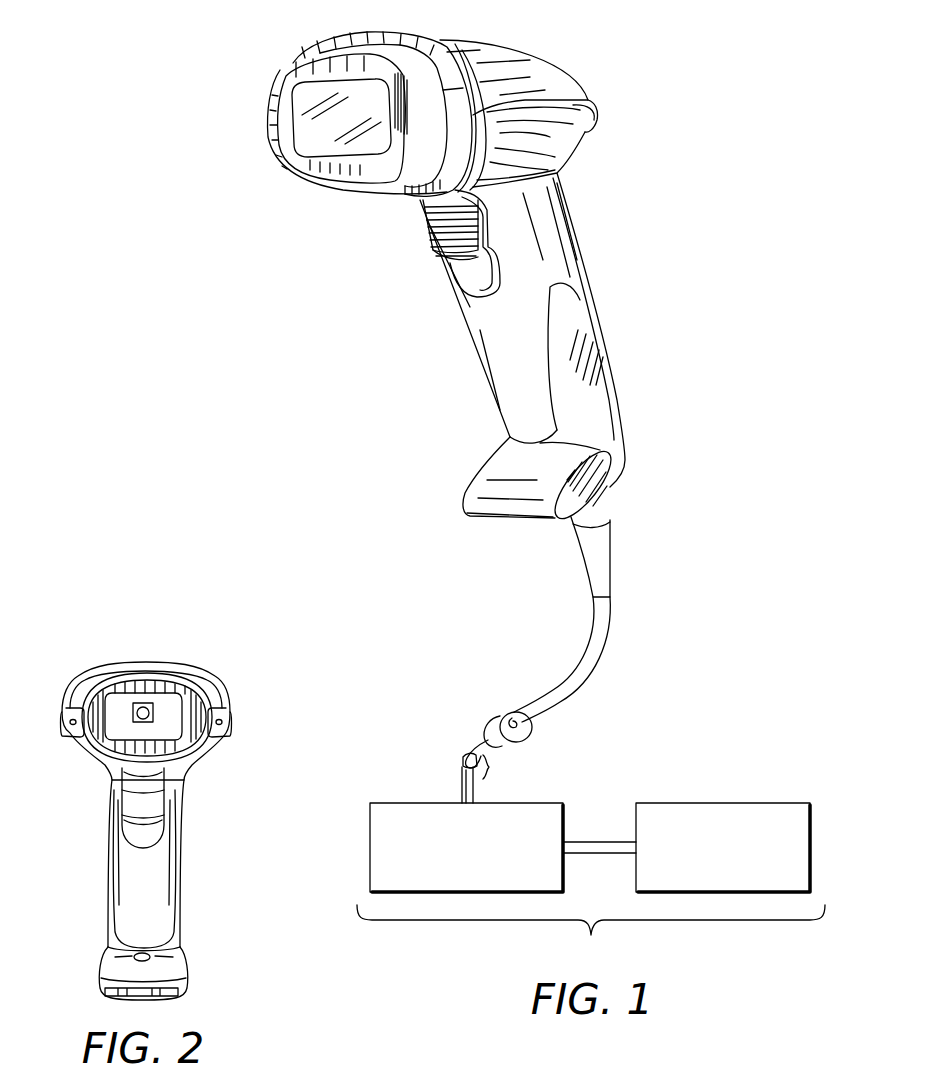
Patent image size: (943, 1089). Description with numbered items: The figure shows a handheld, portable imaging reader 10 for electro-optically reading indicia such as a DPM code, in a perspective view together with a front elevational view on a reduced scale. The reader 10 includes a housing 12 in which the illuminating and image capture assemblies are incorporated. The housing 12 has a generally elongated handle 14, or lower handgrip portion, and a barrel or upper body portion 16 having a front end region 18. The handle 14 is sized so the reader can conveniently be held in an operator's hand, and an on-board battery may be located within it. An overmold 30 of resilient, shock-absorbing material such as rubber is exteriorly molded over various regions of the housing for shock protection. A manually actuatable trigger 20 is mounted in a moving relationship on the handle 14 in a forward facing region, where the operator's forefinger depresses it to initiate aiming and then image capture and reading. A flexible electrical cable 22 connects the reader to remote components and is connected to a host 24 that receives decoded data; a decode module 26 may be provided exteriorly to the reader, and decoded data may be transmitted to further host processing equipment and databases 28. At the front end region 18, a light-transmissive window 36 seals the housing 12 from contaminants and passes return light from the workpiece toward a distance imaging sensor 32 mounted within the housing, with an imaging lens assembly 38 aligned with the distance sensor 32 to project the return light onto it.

In FIG. 1, the imaging reader 10 is at (453, 408).
In FIG. 2, the imaging reader 10 is at (146, 813).
In FIG. 1, the housing 12 is at (534, 109).
In FIG. 1, the handle 14 is at (613, 378).
In FIG. 2, the handle 14 is at (180, 872).
In FIG. 1, the upper body portion 16 is at (453, 42).
In FIG. 2, the upper body portion 16 is at (180, 666).
In FIG. 1, the front end region 18 is at (281, 90).
In FIG. 1, the trigger 20 is at (458, 260).
In FIG. 2, the trigger 20 is at (148, 800).
In FIG. 1, the electrical cable 22 is at (613, 560).
In FIG. 1, the host 24 is at (593, 872).
In FIG. 1, the decode module 26 is at (547, 804).
In FIG. 1, the databases 28 is at (792, 804).
In FIG. 1, the overmold 30 is at (592, 120).
In FIG. 2, the overmold 30 is at (226, 721).
In FIG. 2, the distance imaging sensor 32 is at (128, 714).
In FIG. 1, the light-transmissive window 36 is at (306, 140).
In FIG. 2, the imaging lens assembly 38 is at (156, 711).